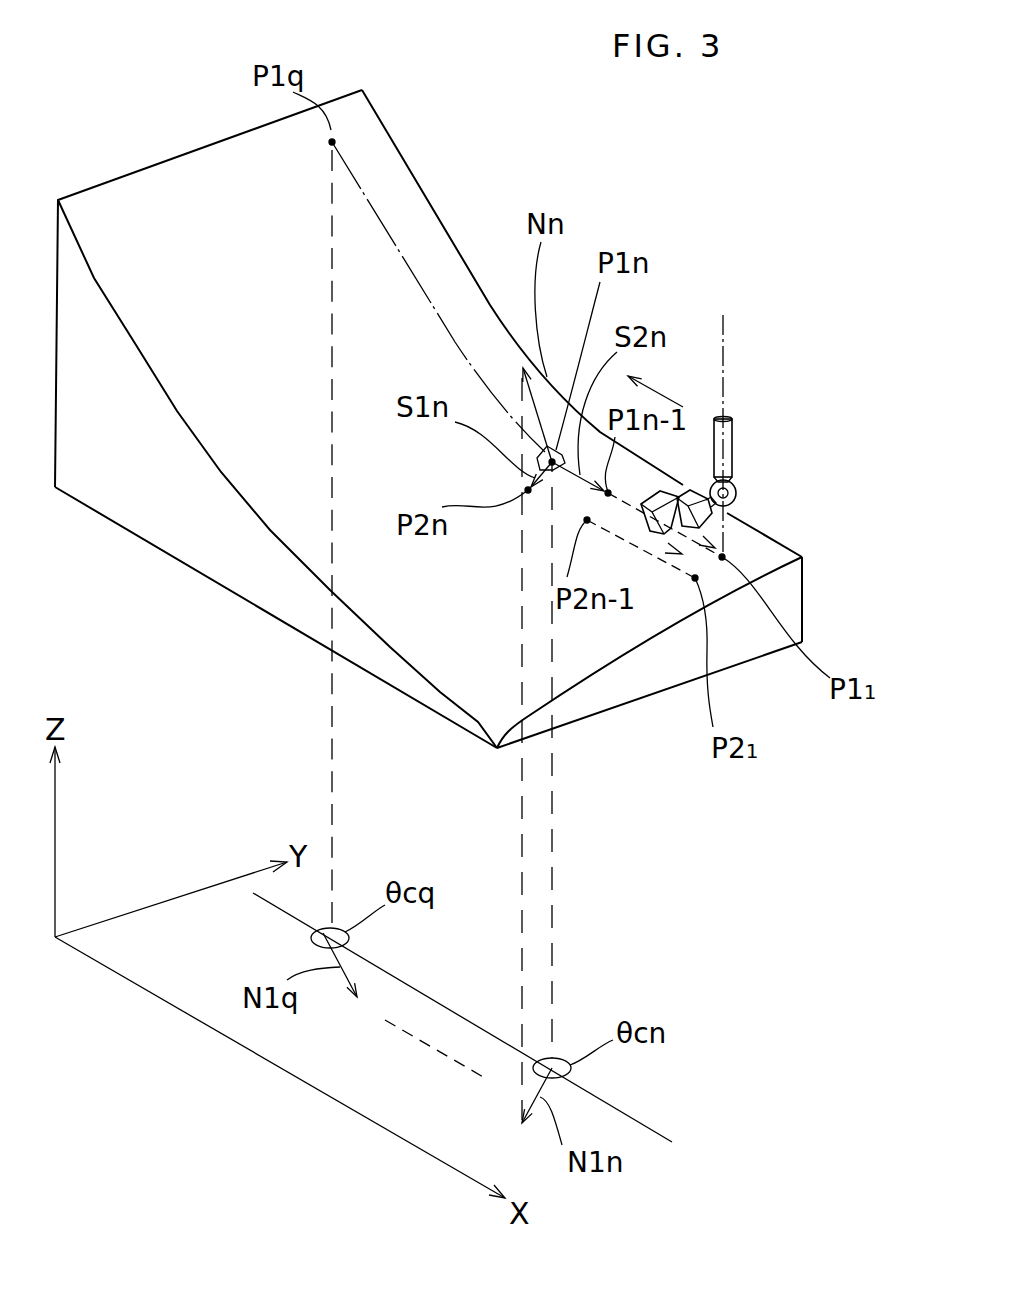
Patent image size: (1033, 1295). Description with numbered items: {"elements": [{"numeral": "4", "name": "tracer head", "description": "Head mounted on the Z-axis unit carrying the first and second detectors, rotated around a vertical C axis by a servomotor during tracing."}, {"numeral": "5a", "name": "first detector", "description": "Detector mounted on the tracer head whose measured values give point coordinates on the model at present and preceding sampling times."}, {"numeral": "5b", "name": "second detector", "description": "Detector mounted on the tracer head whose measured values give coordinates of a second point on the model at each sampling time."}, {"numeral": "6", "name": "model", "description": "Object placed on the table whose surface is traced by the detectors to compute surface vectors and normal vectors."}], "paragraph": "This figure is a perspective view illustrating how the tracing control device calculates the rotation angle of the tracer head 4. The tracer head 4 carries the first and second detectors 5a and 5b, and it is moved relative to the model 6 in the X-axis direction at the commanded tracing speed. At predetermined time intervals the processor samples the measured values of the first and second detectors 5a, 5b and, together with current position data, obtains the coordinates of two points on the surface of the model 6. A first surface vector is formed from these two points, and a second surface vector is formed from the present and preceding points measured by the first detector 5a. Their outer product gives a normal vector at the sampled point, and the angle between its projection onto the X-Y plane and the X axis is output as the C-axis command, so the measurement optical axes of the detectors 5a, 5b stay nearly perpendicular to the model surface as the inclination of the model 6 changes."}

The probe 4 is at (733, 447).
The stylus block 5a is at (738, 517).
The stylus block 5b is at (653, 535).
The workpiece 6 is at (223, 562).